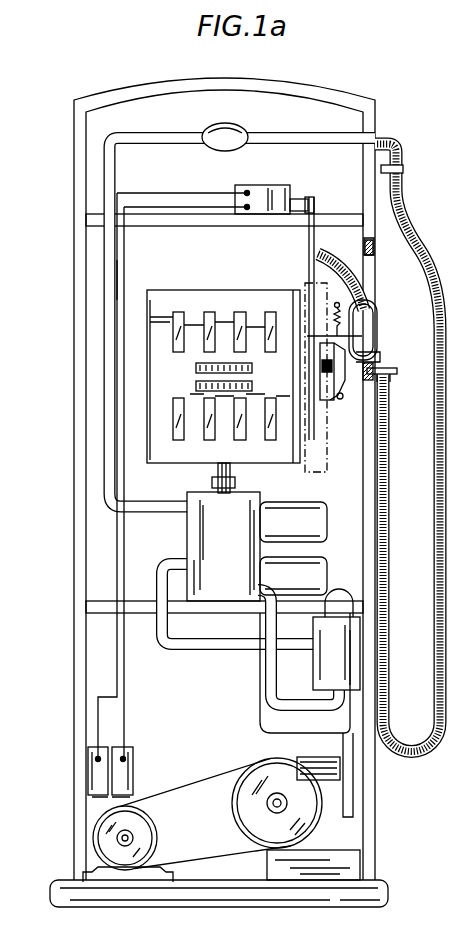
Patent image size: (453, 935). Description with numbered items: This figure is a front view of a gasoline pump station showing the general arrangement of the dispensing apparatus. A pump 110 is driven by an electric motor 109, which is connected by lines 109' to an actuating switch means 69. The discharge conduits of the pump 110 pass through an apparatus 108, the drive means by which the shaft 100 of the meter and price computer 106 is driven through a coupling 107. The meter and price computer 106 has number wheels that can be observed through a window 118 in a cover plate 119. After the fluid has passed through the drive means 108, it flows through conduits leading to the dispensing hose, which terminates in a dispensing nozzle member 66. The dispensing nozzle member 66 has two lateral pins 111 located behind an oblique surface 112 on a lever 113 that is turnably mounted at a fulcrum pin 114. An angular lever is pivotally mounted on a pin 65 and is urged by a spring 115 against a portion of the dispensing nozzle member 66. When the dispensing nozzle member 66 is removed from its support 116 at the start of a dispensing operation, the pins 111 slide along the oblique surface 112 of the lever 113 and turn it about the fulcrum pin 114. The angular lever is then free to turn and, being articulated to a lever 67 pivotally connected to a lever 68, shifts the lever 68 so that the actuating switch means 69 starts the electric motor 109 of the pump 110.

The pin 65 is at (337, 403).
The dispensing nozzle member 66 is at (373, 297).
The lever 67 is at (315, 241).
The lever 68 is at (310, 197).
The actuating switch means 69 is at (266, 185).
The shaft 100 is at (217, 470).
The meter and price computer 106 is at (208, 287).
The coupling 107 is at (240, 481).
The apparatus 108 is at (195, 537).
The electric motor 109 is at (147, 838).
The lines 109' is at (81, 280).
The pump 110 is at (270, 772).
The lateral pins 111 is at (366, 318).
The oblique surface 112 is at (362, 342).
The lever 113 is at (375, 347).
The fulcrum pin 114 is at (317, 337).
The spring 115 is at (380, 383).
The support 116 is at (383, 358).
The window 118 is at (240, 314).
The cover plate 119 is at (157, 295).